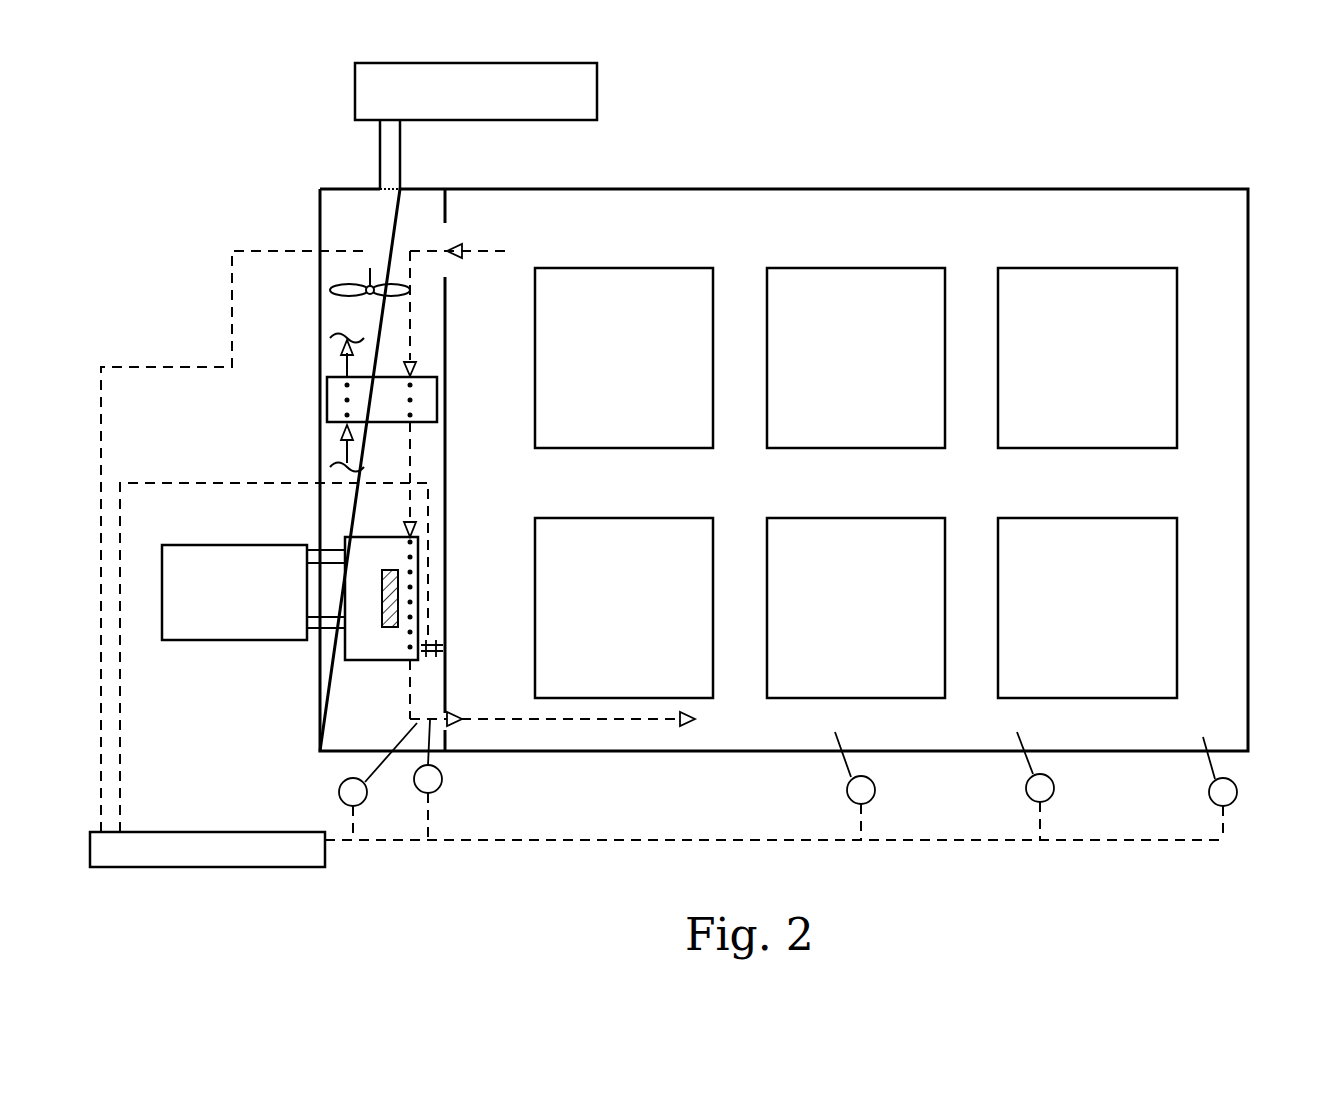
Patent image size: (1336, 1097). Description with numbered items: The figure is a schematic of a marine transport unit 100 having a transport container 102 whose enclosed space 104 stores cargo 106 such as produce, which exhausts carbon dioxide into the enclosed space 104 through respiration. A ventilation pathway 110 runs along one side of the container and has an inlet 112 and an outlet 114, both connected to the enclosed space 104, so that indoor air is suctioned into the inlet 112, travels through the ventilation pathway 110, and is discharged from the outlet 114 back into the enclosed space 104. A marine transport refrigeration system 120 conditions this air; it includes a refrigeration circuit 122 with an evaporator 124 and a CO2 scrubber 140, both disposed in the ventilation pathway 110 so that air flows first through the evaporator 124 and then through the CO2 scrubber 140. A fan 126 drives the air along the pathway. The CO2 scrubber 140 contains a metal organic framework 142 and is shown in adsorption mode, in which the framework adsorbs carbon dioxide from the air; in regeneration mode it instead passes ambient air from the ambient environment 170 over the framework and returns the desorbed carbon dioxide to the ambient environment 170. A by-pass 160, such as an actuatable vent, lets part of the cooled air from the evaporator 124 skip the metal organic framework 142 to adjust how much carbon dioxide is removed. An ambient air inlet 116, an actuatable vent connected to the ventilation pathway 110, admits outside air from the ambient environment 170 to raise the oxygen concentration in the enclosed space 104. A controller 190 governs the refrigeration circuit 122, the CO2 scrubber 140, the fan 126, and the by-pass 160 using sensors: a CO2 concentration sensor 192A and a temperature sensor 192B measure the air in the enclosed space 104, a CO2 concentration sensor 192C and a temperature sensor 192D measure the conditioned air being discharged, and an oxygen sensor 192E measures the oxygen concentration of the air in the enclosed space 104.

The marine transport unit 100 is at (222, 114).
The transport container 102 is at (1248, 233).
The enclosed space 104 is at (1122, 235).
The cargo 106 is at (1010, 267).
The ventilation pathway 110 is at (333, 223).
The inlet 112 is at (442, 243).
The outlet 114 is at (448, 730).
The ambient air inlet 116 is at (400, 168).
The marine transport refrigeration system 120 is at (340, 200).
The refrigeration circuit 122 is at (332, 447).
The evaporator 124 is at (327, 397).
The fan 126 is at (322, 312).
The CO2 scrubber 140 is at (417, 648).
The metal organic framework 142 is at (382, 620).
The by-pass 160 is at (428, 660).
The ambient environment 170 is at (597, 90).
The controller 190 is at (280, 868).
The CO2 concentration sensor 192A is at (1048, 800).
The temperature sensor 192B is at (872, 800).
The CO2 concentration sensor 192C is at (434, 795).
The temperature sensor 192D is at (342, 782).
The oxygen sensor 192E is at (1233, 805).